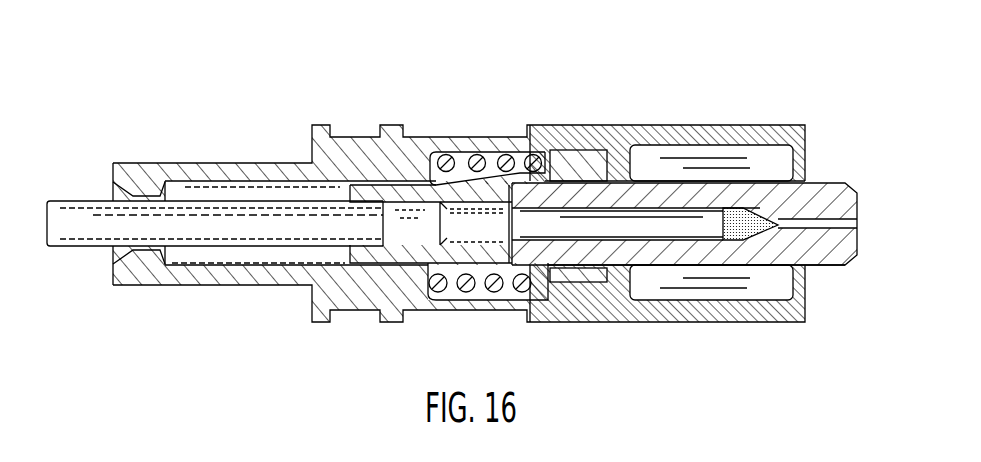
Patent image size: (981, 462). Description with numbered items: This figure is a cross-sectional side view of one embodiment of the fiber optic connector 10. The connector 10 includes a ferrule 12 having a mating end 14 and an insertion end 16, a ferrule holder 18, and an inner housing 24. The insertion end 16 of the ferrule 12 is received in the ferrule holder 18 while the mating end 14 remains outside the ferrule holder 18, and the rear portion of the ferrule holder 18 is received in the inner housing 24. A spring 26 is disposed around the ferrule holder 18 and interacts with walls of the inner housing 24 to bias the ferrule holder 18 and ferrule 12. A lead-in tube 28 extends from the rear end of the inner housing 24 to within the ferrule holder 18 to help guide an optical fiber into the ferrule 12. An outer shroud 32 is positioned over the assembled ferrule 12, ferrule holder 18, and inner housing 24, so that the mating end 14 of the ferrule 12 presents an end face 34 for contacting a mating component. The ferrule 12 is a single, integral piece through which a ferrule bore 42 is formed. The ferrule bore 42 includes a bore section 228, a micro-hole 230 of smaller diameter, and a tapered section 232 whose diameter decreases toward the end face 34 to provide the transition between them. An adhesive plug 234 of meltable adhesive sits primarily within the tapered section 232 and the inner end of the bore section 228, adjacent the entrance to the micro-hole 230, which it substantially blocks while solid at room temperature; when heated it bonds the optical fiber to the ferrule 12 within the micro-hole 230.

The connector 10 is at (525, 78).
The ferrule 12 is at (820, 192).
The mating end 14 is at (812, 252).
The insertion end 16 is at (506, 268).
The ferrule holder 18 is at (450, 250).
The inner housing 24 is at (308, 154).
The spring 26 is at (450, 155).
The lead-in tube 28 is at (82, 201).
The outer shroud 32 is at (616, 125).
The end face 34 is at (857, 228).
The ferrule bore 42 is at (678, 234).
The bore section 228 is at (617, 232).
The micro-hole 230 is at (790, 300).
The tapered section 232 is at (760, 200).
The adhesive plug 234 is at (747, 228).